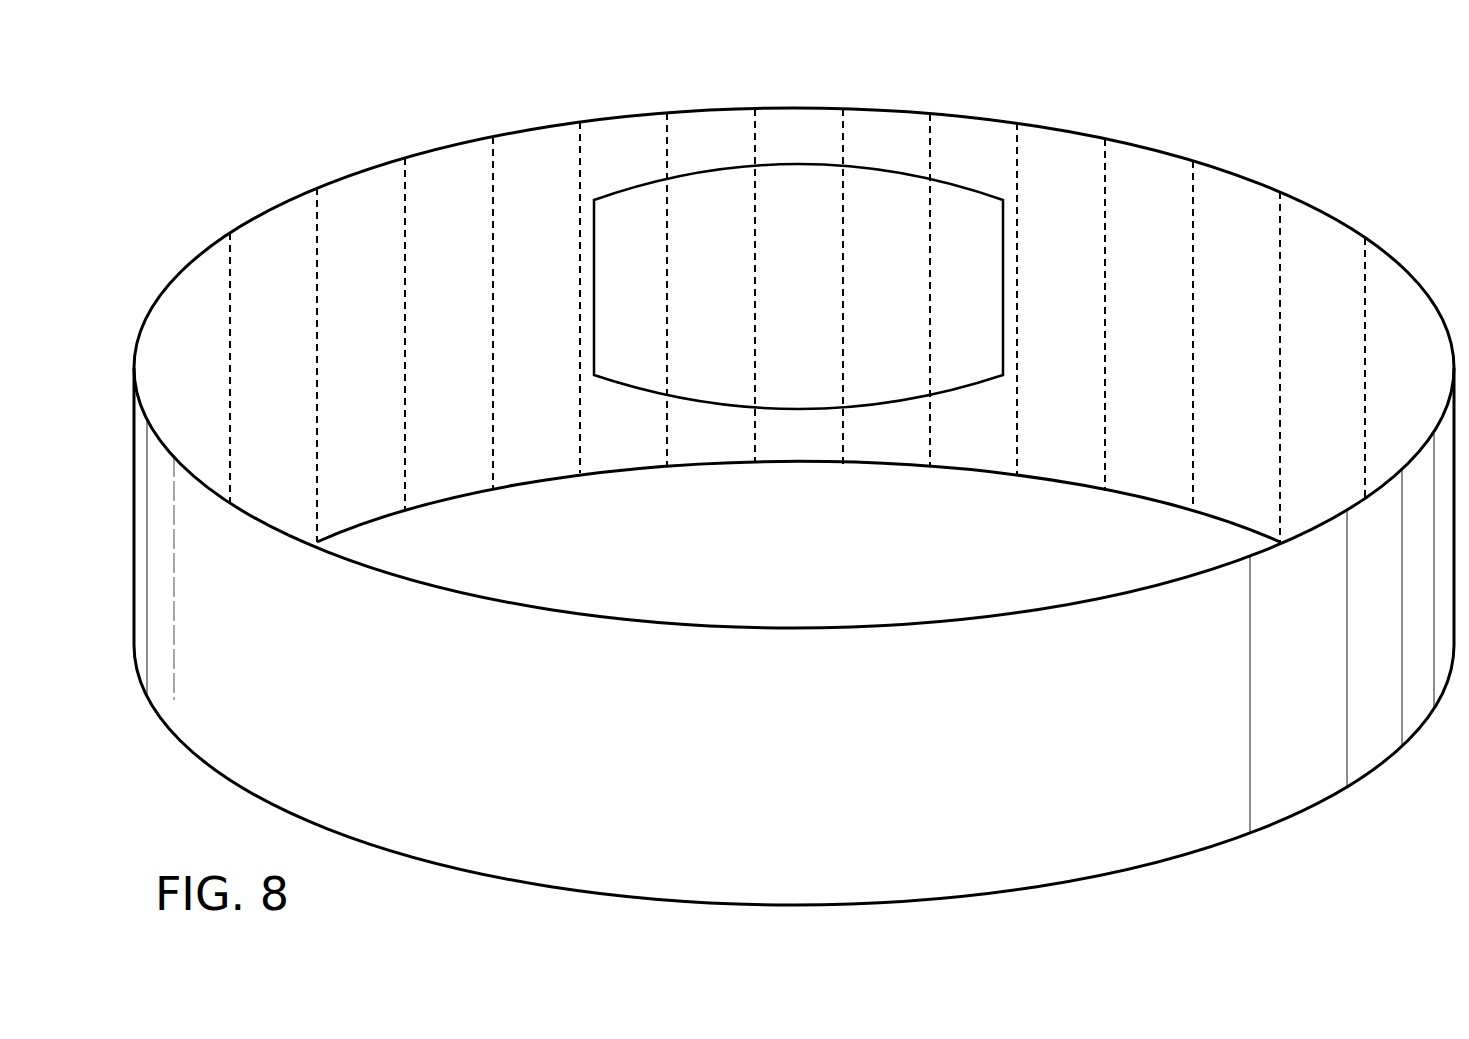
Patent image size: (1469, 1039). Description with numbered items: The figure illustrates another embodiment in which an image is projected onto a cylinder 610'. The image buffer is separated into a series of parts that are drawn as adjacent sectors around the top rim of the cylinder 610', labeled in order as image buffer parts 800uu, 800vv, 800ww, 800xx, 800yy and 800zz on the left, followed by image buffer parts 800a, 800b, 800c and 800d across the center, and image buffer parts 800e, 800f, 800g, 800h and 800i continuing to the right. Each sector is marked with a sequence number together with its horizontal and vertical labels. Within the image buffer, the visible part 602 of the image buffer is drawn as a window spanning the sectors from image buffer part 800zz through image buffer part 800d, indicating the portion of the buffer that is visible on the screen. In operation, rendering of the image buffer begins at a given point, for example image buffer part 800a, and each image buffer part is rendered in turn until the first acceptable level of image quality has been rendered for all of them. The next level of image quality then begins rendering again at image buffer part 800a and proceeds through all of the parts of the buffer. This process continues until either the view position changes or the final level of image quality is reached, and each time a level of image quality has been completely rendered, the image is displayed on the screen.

The cylinder 610' is at (794, 506).
The visible part of the image buffer 602 is at (795, 410).
The image buffer part 800uu is at (184, 265).
The image buffer part 800vv is at (272, 208).
The image buffer part 800ww is at (359, 170).
The image buffer part 800xx is at (449, 144).
The image buffer part 800yy is at (536, 128).
The image buffer part 800zz is at (622, 116).
The image buffer part 800a is at (711, 109).
The image buffer part 800b is at (797, 108).
The image buffer part 800c is at (885, 110).
The image buffer part 800d is at (972, 118).
The image buffer part 800e is at (1058, 130).
The image buffer part 800f is at (1145, 148).
The image buffer part 800g is at (1232, 173).
The image buffer part 800h is at (1318, 210).
The image buffer part 800i is at (1405, 270).